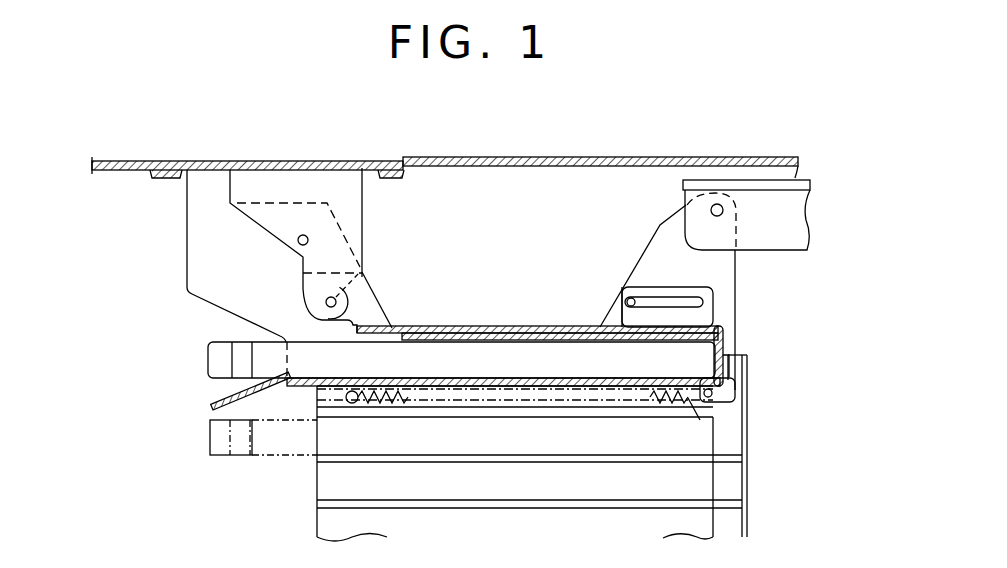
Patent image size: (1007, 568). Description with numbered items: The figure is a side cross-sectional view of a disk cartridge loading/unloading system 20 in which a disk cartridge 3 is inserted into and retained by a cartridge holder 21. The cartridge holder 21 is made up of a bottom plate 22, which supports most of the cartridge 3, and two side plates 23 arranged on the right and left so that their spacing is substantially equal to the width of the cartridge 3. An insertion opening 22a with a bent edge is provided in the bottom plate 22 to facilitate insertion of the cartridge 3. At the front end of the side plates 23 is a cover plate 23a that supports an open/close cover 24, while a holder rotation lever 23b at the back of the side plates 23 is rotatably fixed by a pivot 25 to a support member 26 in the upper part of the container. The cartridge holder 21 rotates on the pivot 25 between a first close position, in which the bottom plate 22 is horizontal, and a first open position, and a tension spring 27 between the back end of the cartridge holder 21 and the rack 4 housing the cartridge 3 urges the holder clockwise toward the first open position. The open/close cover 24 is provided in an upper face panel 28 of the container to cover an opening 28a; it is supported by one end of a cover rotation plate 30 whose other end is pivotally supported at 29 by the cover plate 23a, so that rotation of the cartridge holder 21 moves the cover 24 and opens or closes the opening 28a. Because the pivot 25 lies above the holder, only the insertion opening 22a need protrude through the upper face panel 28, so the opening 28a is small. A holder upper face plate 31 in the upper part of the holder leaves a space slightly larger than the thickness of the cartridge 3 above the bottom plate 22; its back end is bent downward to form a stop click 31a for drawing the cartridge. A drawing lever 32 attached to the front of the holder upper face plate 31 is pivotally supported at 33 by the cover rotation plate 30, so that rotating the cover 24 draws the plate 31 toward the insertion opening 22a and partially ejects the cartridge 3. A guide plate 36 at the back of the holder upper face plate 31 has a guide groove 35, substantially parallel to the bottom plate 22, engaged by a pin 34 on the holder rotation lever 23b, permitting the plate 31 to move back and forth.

The disk cartridge 3 is at (205, 358).
The rack 4 is at (727, 498).
The disk cartridge loading/unloading system 20 is at (163, 326).
The cartridge holder 21 is at (262, 402).
The bottom plate 22 is at (297, 388).
The insertion opening 22a is at (218, 392).
The side plates 23 is at (482, 326).
The cover plate 23a is at (232, 252).
The holder rotation lever 23b is at (670, 260).
The open/close cover 24 is at (248, 160).
The pivot 25 is at (717, 203).
The support member 26 is at (762, 207).
The tension spring 27 is at (700, 420).
The upper face panel 28 is at (497, 158).
The opening 28a is at (373, 167).
The pivotal point 29 is at (310, 236).
The cover rotation plate 30 is at (350, 228).
The holder upper face plate 31 is at (517, 326).
The stop click 31a is at (722, 343).
The drawing lever 32 is at (362, 306).
The pivotal support 33 is at (363, 270).
The pin 34 is at (619, 290).
The guide groove 35 is at (694, 284).
The guide plate 36 is at (706, 302).